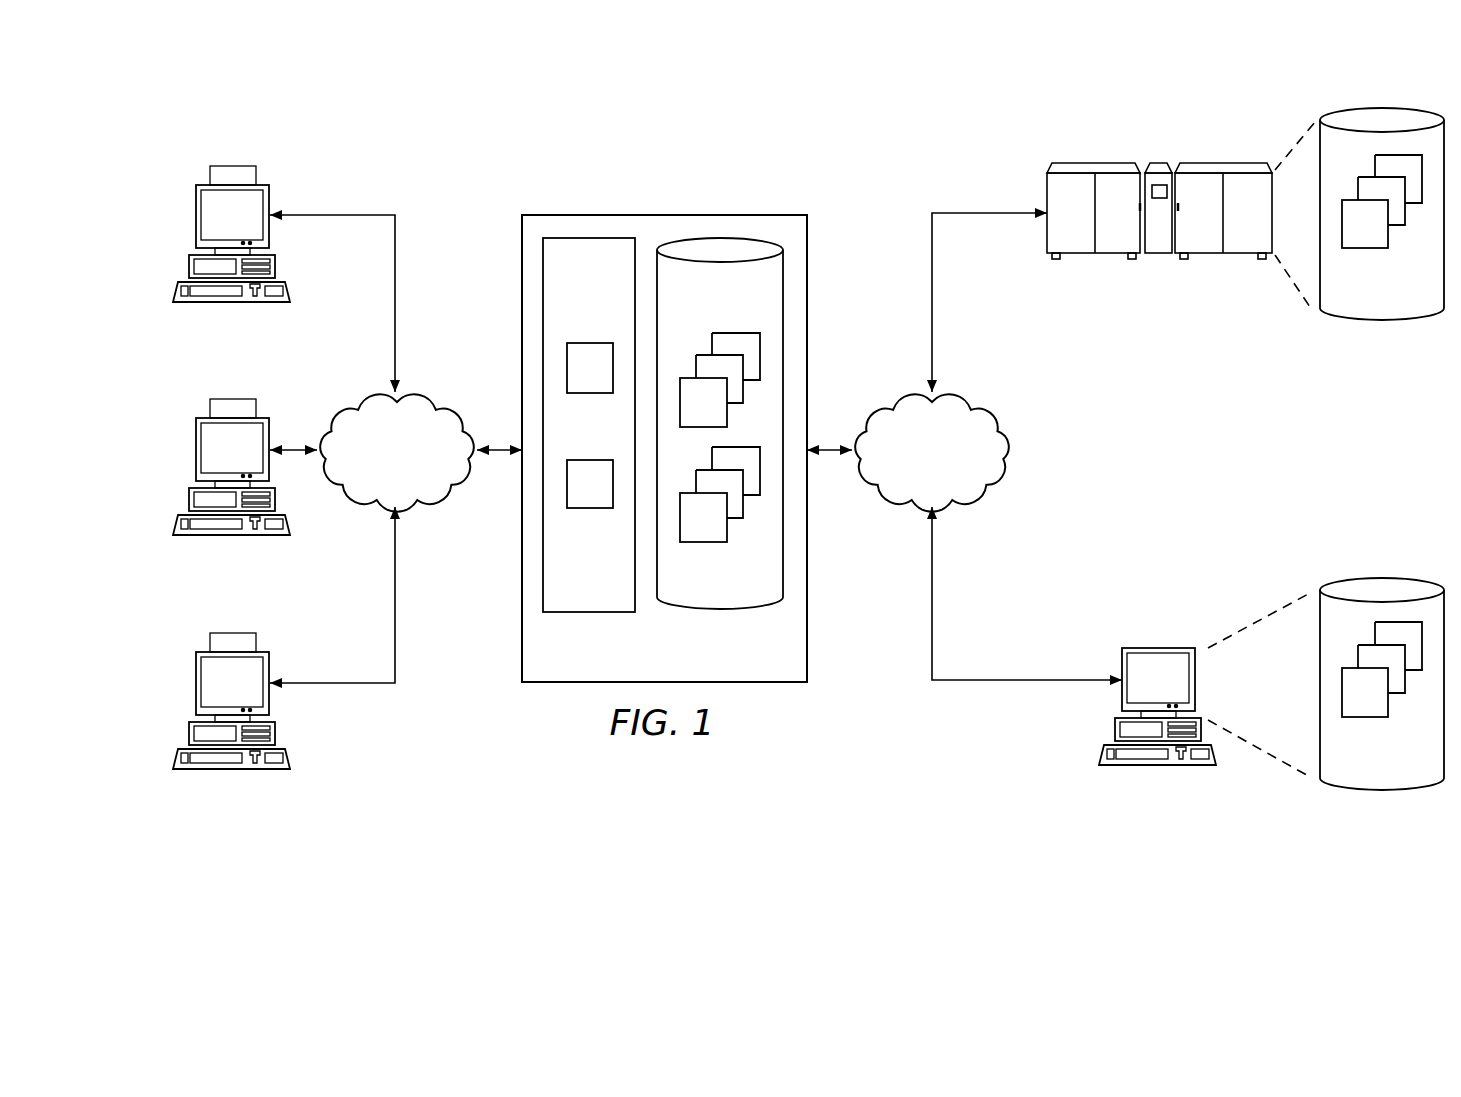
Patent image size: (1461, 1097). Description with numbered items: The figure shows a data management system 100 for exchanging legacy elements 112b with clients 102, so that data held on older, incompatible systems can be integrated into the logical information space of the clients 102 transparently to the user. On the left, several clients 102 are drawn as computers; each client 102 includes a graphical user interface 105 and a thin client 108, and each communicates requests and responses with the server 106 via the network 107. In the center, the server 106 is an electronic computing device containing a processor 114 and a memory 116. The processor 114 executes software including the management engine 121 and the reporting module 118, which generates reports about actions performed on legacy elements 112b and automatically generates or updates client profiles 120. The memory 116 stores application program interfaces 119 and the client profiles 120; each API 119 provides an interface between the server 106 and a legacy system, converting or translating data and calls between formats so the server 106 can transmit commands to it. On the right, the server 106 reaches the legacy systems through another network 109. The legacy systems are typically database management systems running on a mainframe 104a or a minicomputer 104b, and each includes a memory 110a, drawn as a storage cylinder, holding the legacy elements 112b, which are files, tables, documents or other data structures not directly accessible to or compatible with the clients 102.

The data management system 100 is at (974, 138).
The client 102 is at (189, 269).
The mainframe 104a is at (1200, 163).
The minicomputer 104b is at (1160, 648).
The graphical user interface 105 is at (210, 210).
The server 106 is at (644, 208).
The network 107 is at (377, 465).
The thin client 108 is at (211, 178).
The network 109 is at (912, 465).
The memory 110a is at (1400, 320).
The legacy element 112b is at (1365, 248).
The processor 114 is at (588, 612).
The memory 116 is at (735, 608).
The reporting module 118 is at (588, 508).
The application program interface 119 is at (738, 333).
The client profile 120 is at (700, 542).
The management engine 121 is at (588, 343).